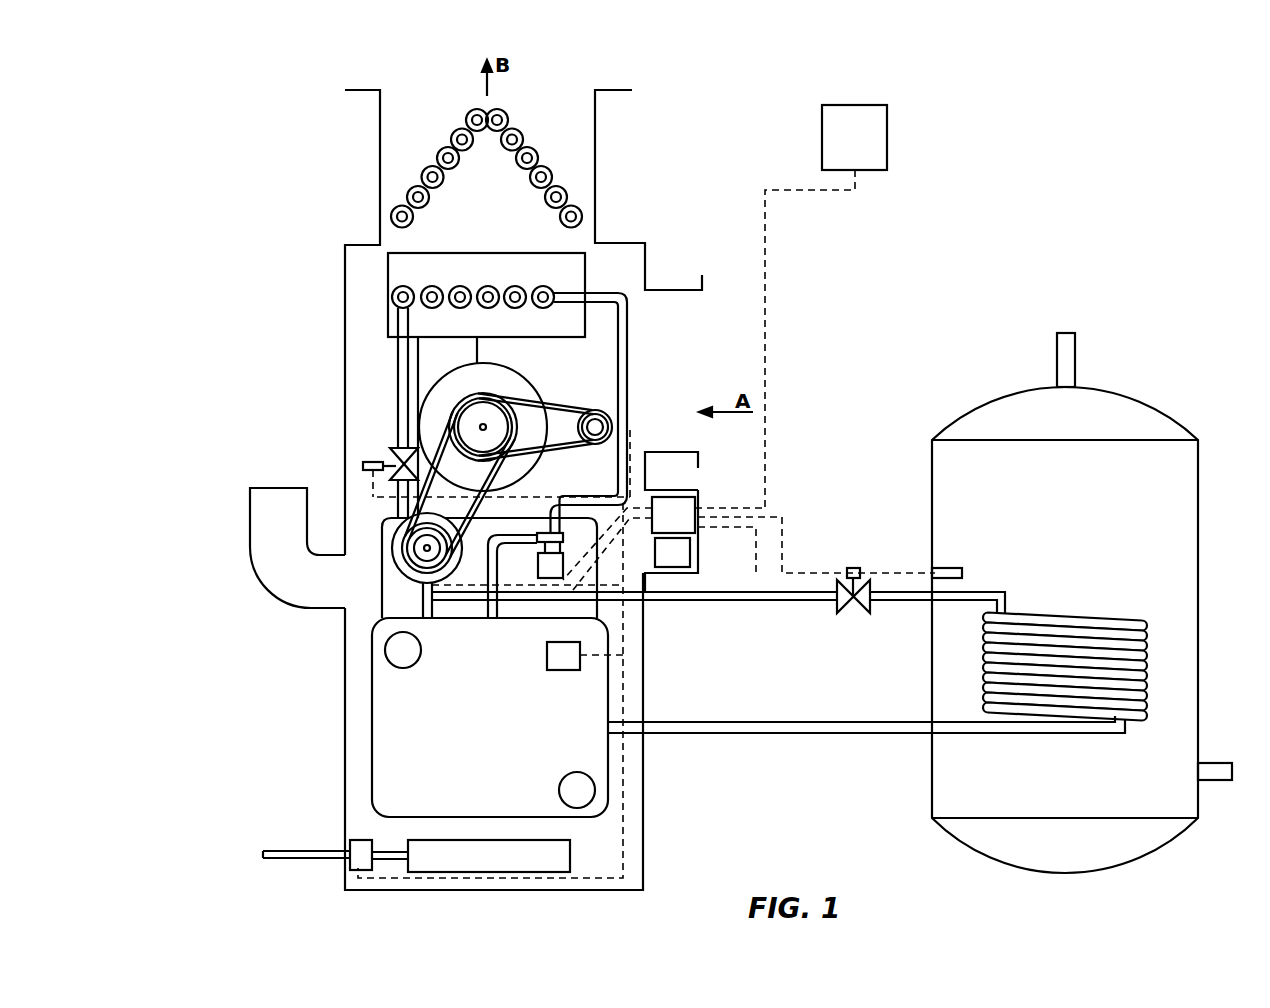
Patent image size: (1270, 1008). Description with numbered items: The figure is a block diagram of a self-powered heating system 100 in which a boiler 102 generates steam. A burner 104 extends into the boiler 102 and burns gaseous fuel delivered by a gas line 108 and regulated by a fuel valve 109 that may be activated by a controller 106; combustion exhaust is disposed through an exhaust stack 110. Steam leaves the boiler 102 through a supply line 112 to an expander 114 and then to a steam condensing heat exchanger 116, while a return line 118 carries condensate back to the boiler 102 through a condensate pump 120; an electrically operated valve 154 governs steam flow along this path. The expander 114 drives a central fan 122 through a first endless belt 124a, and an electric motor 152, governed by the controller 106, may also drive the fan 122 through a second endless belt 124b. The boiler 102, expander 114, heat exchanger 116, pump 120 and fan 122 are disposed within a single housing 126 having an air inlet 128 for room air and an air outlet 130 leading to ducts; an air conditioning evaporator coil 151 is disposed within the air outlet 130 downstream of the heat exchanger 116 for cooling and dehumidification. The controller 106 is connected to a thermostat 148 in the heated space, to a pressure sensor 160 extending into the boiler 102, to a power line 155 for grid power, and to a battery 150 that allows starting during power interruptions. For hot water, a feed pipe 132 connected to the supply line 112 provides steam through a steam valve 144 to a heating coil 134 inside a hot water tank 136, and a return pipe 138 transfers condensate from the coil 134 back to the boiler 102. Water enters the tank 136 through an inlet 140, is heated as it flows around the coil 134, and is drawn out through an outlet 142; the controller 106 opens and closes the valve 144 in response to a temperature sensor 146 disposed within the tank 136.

The self-powered heating system 100 is at (928, 240).
The boiler 102 is at (372, 752).
The burner 104 is at (497, 873).
The controller 106 is at (696, 497).
The gas line 108 is at (272, 860).
The fuel valve 109 is at (350, 866).
The exhaust stack 110 is at (286, 608).
The supply line 112 is at (398, 372).
The expander 114 is at (383, 550).
The steam condensing heat exchanger 116 is at (393, 297).
The return line 118 is at (627, 313).
The condensate pump 120 is at (560, 583).
The fan 122 is at (530, 380).
The first endless belt 124a is at (447, 452).
The second endless belt 124b is at (560, 407).
The housing 126 is at (345, 243).
The air inlet 128 is at (690, 452).
The air outlet 130 is at (598, 90).
The feed pipe 132 is at (795, 601).
The heating coil 134 is at (1150, 620).
The hot water tank 136 is at (1198, 500).
The return pipe 138 is at (715, 735).
The inlet 140 is at (1232, 778).
The outlet 142 is at (1064, 333).
The steam valve 144 is at (856, 611).
The temperature sensor 146 is at (942, 568).
The thermostat 148 is at (887, 118).
The battery 150 is at (680, 552).
The air conditioning evaporator coil 151 is at (556, 174).
The electric motor 152 is at (603, 427).
The electrically operated valve 154 is at (388, 452).
The power line 155 is at (758, 543).
The pressure sensor 160 is at (563, 671).